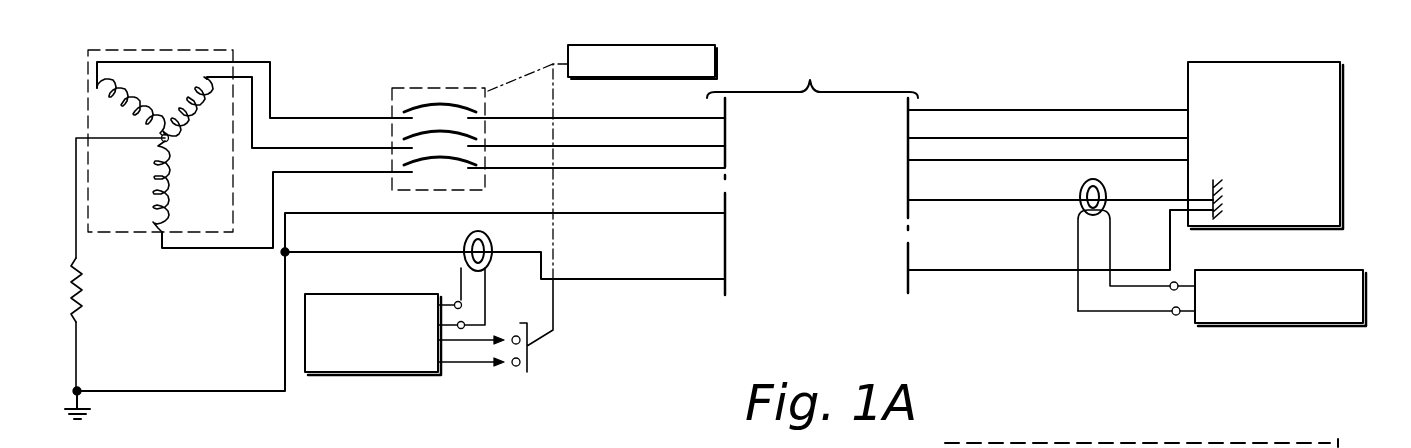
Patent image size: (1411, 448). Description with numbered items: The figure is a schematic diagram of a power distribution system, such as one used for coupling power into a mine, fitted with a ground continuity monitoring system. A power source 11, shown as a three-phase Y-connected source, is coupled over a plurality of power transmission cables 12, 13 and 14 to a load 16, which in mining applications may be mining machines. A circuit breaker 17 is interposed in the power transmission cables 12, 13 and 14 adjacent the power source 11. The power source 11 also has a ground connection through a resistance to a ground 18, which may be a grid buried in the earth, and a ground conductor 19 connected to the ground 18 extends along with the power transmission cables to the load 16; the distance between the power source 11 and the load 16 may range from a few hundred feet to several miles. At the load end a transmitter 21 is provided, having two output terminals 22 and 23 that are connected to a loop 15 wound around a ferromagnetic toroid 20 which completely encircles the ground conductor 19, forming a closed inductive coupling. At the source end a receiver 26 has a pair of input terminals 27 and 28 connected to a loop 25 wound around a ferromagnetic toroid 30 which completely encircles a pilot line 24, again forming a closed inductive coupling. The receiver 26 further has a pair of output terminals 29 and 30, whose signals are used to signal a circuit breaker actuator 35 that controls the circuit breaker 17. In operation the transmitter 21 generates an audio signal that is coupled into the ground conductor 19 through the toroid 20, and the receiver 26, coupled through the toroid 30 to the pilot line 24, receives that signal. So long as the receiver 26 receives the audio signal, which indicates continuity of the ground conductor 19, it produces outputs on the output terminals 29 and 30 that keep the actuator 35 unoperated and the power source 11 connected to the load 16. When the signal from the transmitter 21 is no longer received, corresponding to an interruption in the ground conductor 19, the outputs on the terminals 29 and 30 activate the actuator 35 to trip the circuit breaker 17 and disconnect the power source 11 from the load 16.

The power source 11 is at (88, 78).
The power transmission cable 12 is at (681, 98).
The power transmission cable 13 is at (681, 124).
The power transmission cable 14 is at (684, 164).
The loop 15 is at (1113, 250).
The load 16 is at (1340, 90).
The circuit breaker 17 is at (463, 72).
The ground 18 is at (85, 400).
The ground conductor 19 is at (176, 392).
The ferromagnetic toroid 20 is at (1105, 181).
The transmitter 21 is at (1258, 312).
The output terminal 22 is at (1181, 318).
The output terminal 23 is at (1185, 276).
The pilot line 24 is at (700, 255).
The loop 25 is at (486, 273).
The receiver 26 is at (356, 374).
The input terminal 27 is at (457, 300).
The input terminal 28 is at (465, 321).
The output terminal 29 is at (527, 349).
The ferromagnetic toroid 30 is at (466, 241).
The circuit breaker actuator 35 is at (716, 56).